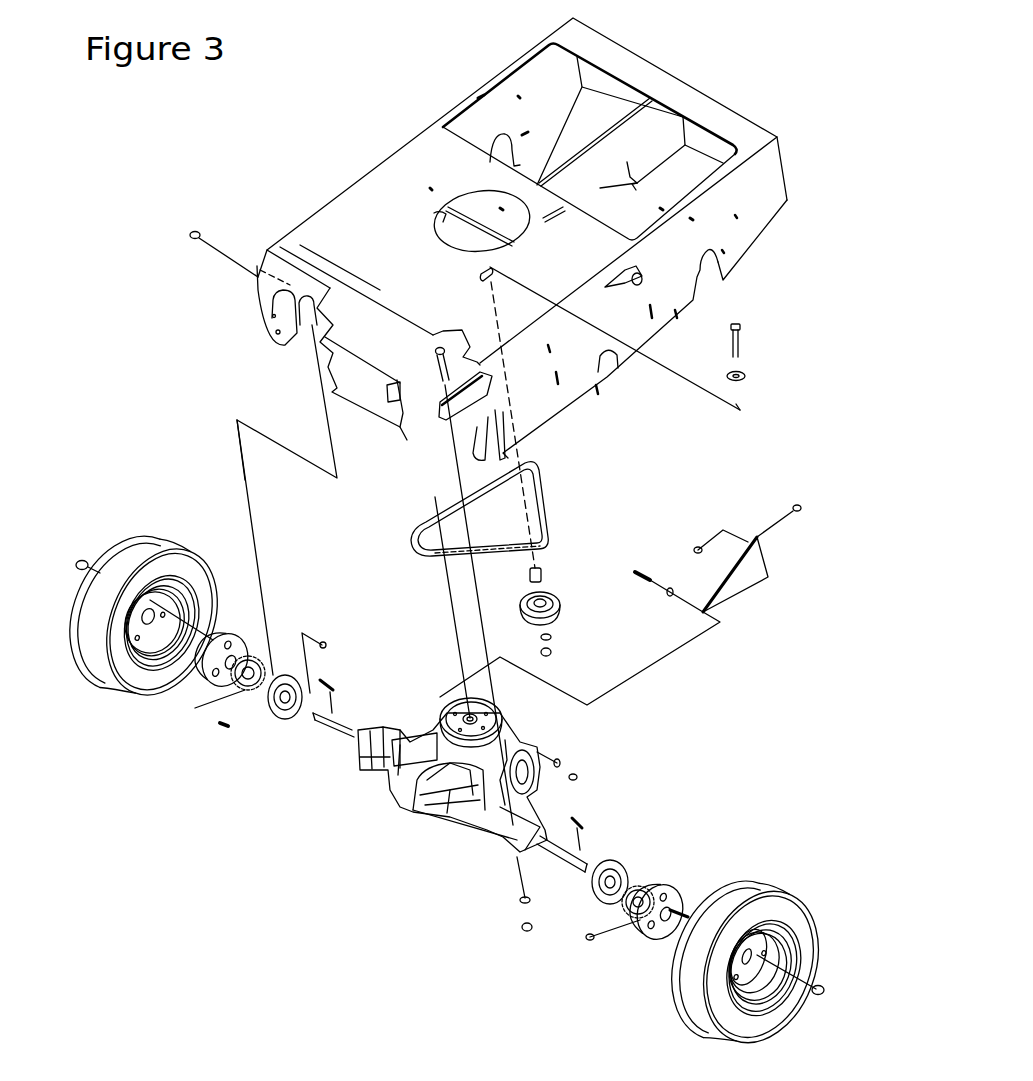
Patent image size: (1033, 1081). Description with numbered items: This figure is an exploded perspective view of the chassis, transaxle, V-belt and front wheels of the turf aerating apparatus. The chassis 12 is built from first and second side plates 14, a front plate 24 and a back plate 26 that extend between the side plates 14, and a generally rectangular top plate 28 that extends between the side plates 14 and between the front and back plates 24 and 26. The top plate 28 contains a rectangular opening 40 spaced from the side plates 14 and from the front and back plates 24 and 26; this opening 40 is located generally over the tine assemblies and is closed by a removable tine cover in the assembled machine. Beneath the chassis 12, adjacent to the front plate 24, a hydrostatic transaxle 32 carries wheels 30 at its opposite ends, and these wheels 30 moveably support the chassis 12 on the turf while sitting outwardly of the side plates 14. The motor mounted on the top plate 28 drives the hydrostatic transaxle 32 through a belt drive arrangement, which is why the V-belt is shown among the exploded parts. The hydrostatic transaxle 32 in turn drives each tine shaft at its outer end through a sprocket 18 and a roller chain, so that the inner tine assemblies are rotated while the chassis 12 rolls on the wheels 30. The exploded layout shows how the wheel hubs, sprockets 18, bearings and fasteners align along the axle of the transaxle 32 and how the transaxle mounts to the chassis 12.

The chassis 12 is at (398, 205).
The side plates 14 is at (540, 82).
The sprocket 18 is at (242, 689).
The front plate 24 is at (360, 387).
The back plate 26 is at (703, 143).
The top plate 28 is at (350, 253).
The wheels 30 is at (158, 543).
The hydrostatic transaxle 32 is at (440, 817).
The rectangular opening 40 is at (587, 112).